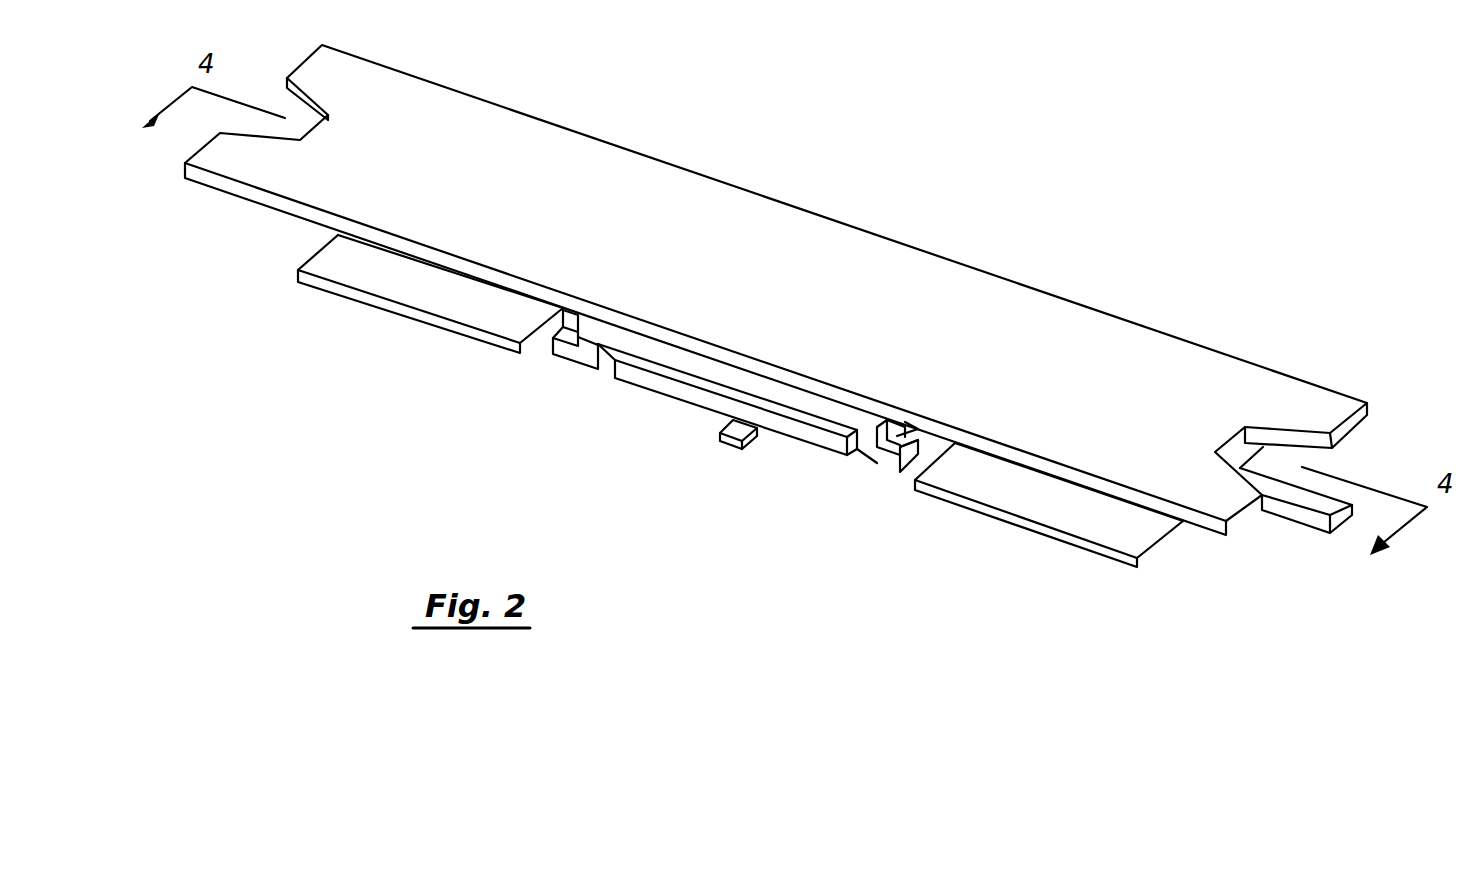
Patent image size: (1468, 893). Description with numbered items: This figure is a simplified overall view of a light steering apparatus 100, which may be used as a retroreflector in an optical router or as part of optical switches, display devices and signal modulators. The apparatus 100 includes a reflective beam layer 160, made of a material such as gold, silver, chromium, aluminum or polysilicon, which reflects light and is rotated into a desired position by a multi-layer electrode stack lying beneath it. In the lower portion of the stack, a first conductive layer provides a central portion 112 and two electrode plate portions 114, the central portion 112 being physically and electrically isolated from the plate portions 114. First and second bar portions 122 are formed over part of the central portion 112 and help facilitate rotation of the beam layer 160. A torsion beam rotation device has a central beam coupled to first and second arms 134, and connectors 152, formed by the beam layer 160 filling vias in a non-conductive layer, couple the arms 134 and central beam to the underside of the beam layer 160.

The apparatus 100 is at (912, 207).
The beam layer 160 is at (1183, 375).
The electrode plate portions 114 is at (408, 310).
The central portion 112 is at (732, 442).
The bar portions 122 is at (823, 440).
The arms 134 is at (885, 458).
The connectors 152 is at (903, 430).